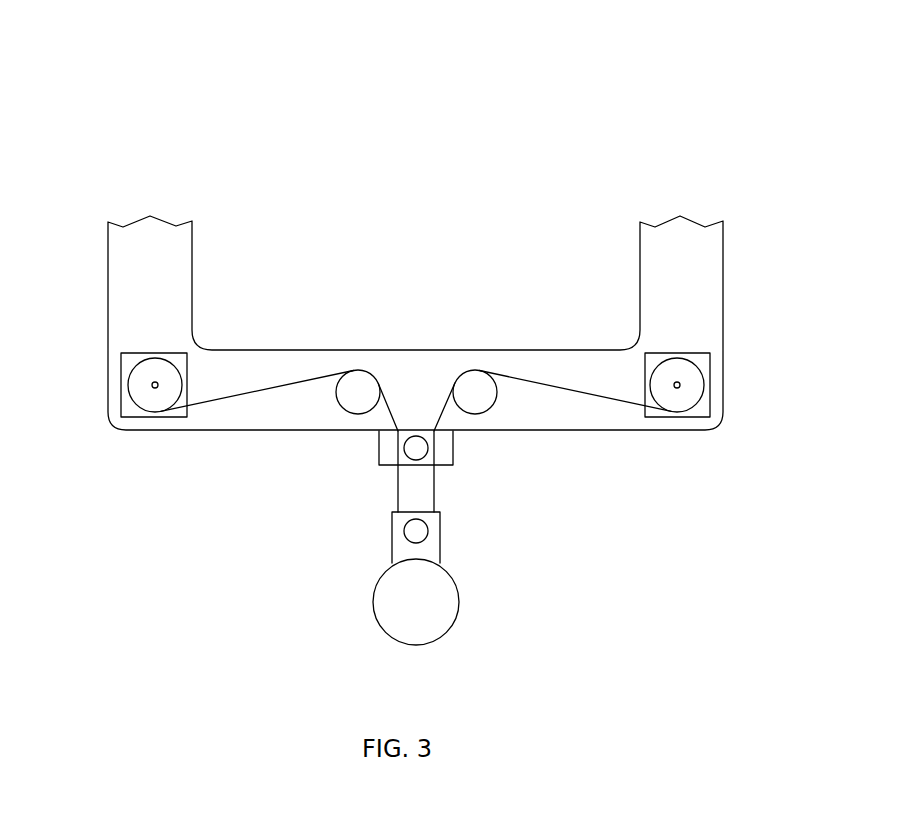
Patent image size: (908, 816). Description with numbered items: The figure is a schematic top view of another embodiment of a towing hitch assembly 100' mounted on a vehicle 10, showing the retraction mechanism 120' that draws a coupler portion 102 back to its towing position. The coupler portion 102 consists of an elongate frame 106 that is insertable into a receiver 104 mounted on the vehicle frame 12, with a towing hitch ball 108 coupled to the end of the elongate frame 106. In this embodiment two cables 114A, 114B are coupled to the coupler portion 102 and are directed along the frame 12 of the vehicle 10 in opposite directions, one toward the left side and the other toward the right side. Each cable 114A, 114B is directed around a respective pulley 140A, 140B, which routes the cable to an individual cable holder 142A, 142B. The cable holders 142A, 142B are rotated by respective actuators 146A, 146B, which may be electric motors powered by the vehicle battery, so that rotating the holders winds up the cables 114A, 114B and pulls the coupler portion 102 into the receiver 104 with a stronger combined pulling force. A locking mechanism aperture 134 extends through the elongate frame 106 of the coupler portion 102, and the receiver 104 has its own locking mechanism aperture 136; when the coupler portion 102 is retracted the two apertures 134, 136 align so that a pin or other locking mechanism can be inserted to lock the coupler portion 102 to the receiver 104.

The retraction mechanism 120' is at (91, 131).
The towing hitch assembly 100' is at (715, 88).
The vehicle 10 is at (814, 270).
The frame 12 is at (108, 278).
The actuator 146A is at (121, 364).
The actuator 146B is at (710, 364).
The cable holder 142A is at (128, 385).
The cable holder 142B is at (704, 385).
The pulley 140A is at (352, 415).
The pulley 140B is at (483, 415).
The cable 114A is at (192, 409).
The cable 114B is at (641, 409).
The receiver 104 is at (379, 456).
The locking mechanism aperture 136 is at (408, 458).
The locking mechanism aperture 134 is at (428, 532).
The elongate frame 106 is at (392, 538).
The towing hitch ball 108 is at (373, 602).
The coupler portion 102 is at (483, 633).